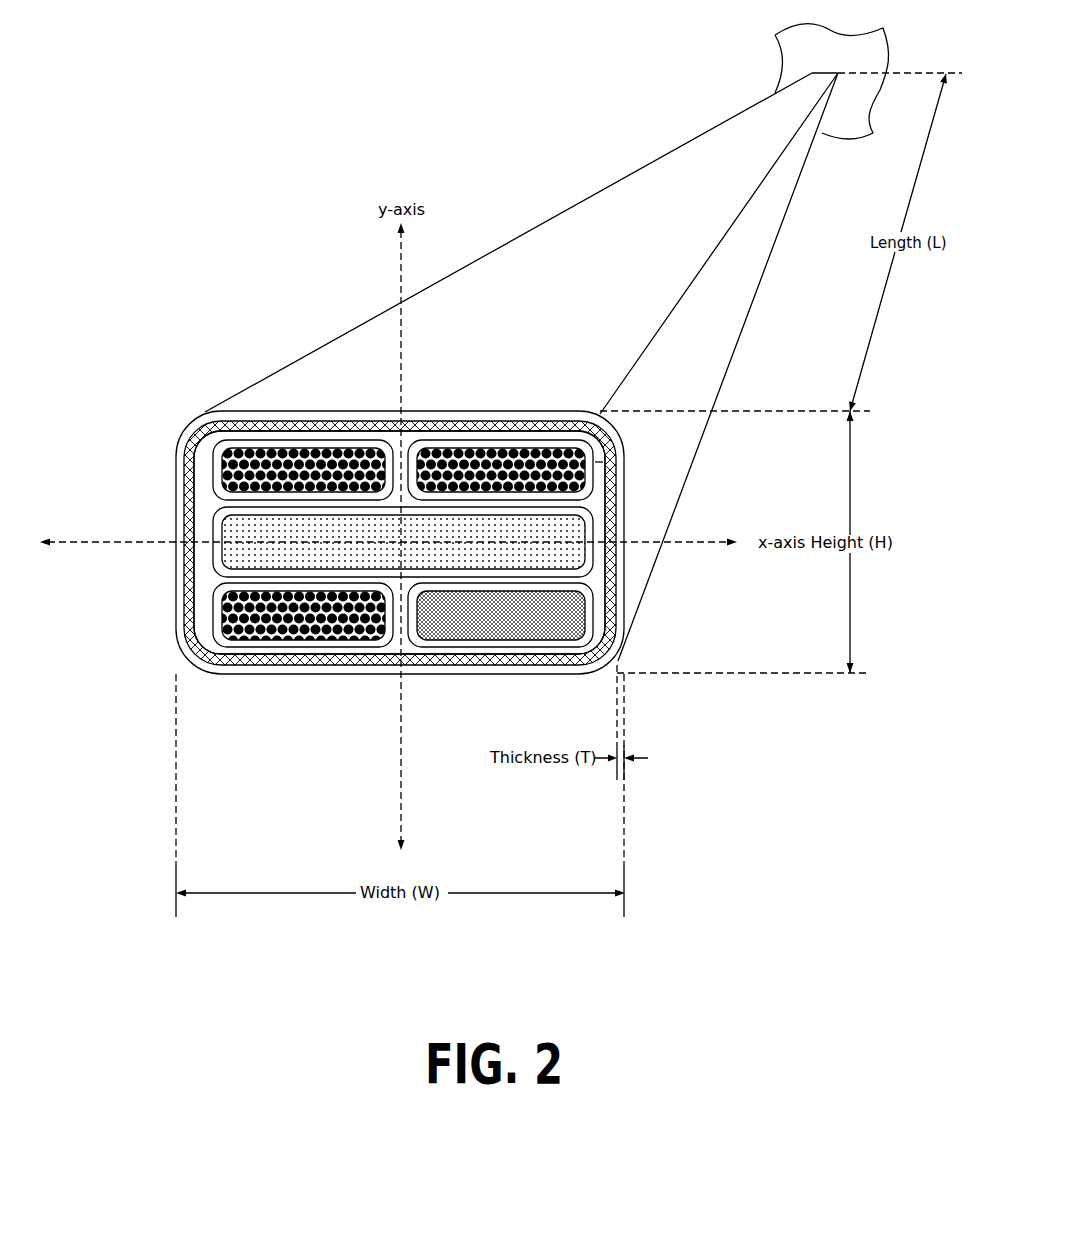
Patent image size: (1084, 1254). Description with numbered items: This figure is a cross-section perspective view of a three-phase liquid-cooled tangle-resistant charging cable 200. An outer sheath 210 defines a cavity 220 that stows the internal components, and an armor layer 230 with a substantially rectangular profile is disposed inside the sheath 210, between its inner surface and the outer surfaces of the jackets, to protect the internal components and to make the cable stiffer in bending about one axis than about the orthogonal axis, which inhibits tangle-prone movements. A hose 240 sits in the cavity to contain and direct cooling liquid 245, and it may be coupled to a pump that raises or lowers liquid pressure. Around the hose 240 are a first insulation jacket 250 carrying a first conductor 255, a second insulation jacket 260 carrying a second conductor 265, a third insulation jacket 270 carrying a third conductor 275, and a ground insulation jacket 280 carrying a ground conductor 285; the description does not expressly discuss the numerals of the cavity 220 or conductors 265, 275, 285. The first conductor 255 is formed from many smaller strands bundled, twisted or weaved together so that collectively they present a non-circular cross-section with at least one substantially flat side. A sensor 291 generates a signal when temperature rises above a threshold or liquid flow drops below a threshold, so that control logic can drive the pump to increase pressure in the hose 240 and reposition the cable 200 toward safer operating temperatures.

The LCTR charging cable 200 is at (245, 237).
The sheath 210 is at (198, 432).
The inner liner 220 is at (202, 462).
The armor layer 230 is at (188, 495).
The hose 240 is at (217, 528).
The cooling liquid 245 is at (242, 562).
The first insulation jacket 250 is at (266, 442).
The first conductor 255 is at (340, 455).
The second insulation jacket 260 is at (470, 443).
The second conductor bundle 265 is at (542, 455).
The third insulation jacket 270 is at (257, 647).
The third conductor bundle 275 is at (333, 647).
The ground insulation jacket 280 is at (472, 647).
The fourth channel fill 285 is at (548, 647).
The sensor 291 is at (605, 464).